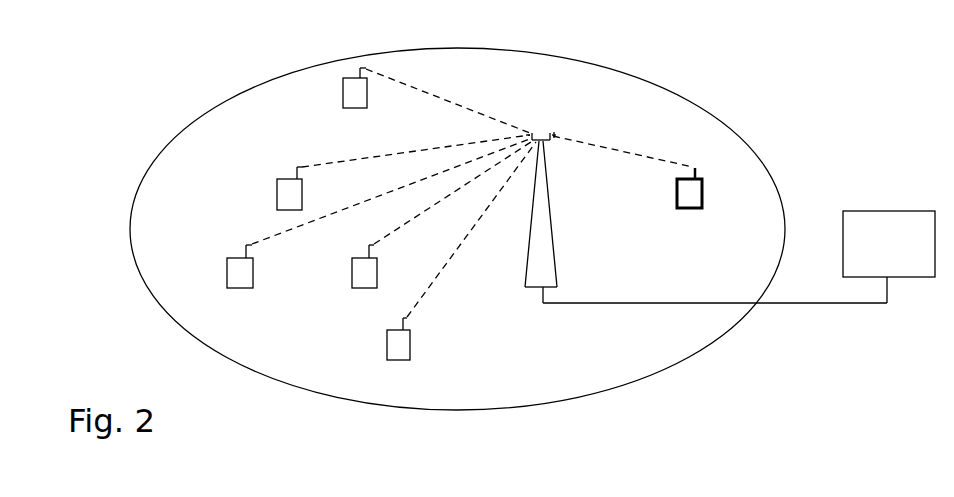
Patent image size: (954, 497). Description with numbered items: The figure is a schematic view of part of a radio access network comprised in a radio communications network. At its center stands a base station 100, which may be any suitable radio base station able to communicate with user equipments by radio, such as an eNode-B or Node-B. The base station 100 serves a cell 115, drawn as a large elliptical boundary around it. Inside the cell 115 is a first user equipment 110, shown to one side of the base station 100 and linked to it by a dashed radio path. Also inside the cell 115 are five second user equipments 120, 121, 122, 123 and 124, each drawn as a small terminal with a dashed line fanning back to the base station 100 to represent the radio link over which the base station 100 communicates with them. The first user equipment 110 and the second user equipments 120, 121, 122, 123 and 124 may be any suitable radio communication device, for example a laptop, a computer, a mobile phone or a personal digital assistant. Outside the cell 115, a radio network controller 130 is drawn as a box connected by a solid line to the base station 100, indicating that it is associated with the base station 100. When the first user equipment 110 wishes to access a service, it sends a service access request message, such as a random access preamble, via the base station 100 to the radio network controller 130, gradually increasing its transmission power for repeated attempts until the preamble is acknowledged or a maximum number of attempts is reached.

The base station 100 is at (546, 245).
The first user equipment 110 is at (706, 193).
The cell 115 is at (599, 375).
The second user equipment 120 is at (371, 94).
The second user equipment 121 is at (306, 196).
The second user equipment 122 is at (257, 274).
The second user equipment 123 is at (381, 274).
The second user equipment 124 is at (414, 346).
The radio network controller 130 is at (889, 257).